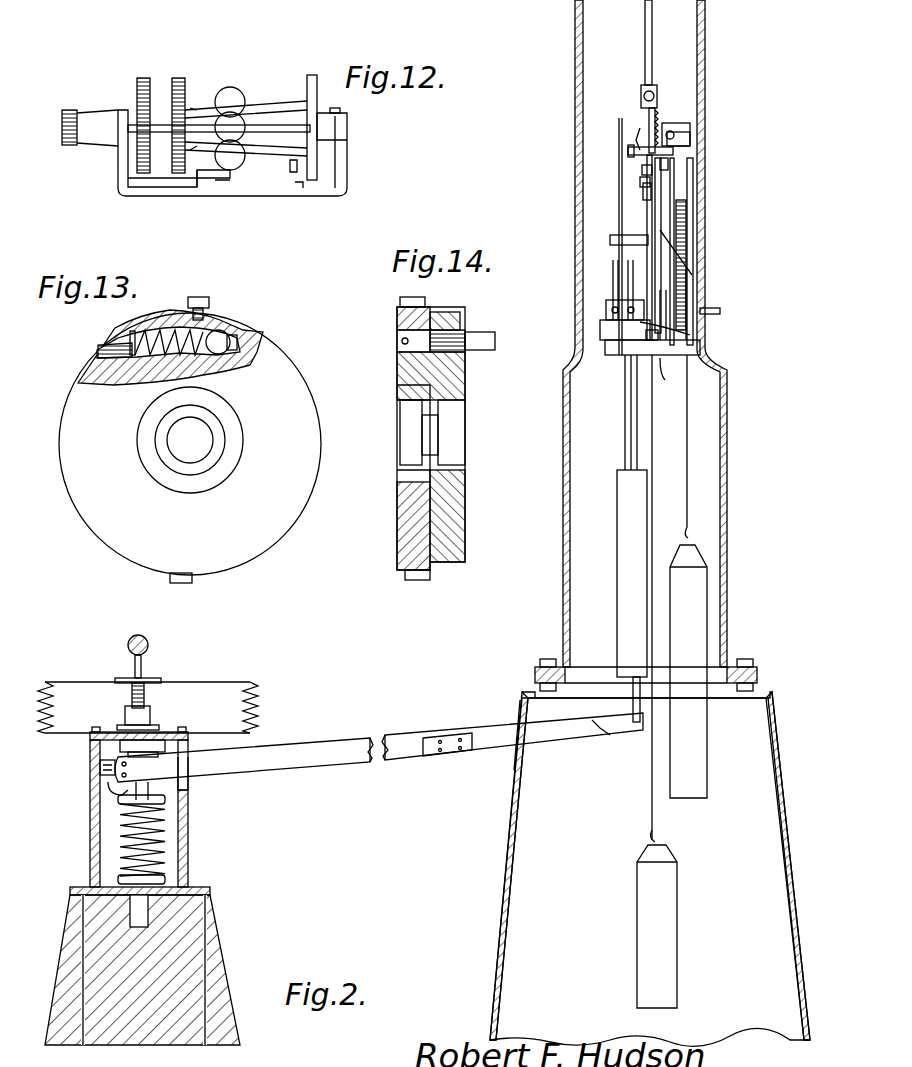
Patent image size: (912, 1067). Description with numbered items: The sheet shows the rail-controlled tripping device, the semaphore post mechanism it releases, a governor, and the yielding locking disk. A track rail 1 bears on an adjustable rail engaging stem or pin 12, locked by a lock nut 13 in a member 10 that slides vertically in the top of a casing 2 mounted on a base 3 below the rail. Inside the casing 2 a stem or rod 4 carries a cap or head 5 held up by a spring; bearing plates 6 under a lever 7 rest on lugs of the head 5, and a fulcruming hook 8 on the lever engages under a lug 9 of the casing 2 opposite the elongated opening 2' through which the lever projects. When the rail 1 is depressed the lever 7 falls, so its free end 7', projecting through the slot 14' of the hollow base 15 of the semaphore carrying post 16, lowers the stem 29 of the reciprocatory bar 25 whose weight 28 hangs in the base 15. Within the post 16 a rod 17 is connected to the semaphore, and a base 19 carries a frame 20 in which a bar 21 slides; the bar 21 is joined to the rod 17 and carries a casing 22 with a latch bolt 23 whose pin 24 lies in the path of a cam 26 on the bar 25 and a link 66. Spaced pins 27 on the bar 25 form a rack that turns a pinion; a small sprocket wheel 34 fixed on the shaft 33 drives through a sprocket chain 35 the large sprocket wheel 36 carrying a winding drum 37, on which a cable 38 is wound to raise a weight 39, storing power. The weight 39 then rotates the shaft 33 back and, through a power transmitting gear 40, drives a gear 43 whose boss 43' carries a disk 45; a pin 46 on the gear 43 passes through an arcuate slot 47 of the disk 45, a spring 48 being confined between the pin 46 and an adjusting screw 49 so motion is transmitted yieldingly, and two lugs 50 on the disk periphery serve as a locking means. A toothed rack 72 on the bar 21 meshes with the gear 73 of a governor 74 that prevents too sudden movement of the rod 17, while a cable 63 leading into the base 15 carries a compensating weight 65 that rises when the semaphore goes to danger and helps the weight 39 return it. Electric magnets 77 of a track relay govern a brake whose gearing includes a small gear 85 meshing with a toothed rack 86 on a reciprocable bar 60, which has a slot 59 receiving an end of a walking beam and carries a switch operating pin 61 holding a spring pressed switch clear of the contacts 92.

In FIG. 2, the track rail 1 is at (148, 641).
In FIG. 2, the casing 2 is at (160, 811).
In FIG. 2, the elongated opening 2' is at (211, 782).
In FIG. 2, the base 3 is at (185, 940).
In FIG. 2, the stem or rod 4 is at (165, 855).
In FIG. 2, the cap or head 5 is at (210, 838).
In FIG. 2, the bearing plates 6 is at (175, 772).
In FIG. 2, the lever 7 is at (505, 731).
In FIG. 2, the free end of lever 7' is at (608, 742).
In FIG. 2, the fulcruming hook 8 is at (108, 790).
In FIG. 2, the lug 9 is at (100, 766).
In FIG. 2, the member 10 is at (145, 750).
In FIG. 2, the rail engaging stem or pin 12 is at (144, 695).
In FIG. 2, the lock nut 13 is at (150, 712).
In FIG. 2, the housing wall 14' is at (541, 743).
In FIG. 2, the hollow base 15 is at (512, 848).
In FIG. 2, the semaphore carrying post or pedestal 16 is at (727, 590).
In FIG. 2, the rod 17 is at (652, 30).
In FIG. 2, the base 19 is at (700, 350).
In FIG. 2, the frame 20 is at (690, 268).
In FIG. 2, the bar 21 is at (640, 95).
In FIG. 2, the casing 22 is at (642, 170).
In FIG. 2, the latch bolt 23 is at (643, 198).
In FIG. 2, the pin 24 is at (640, 182).
In FIG. 2, the vertically reciprocatory bar 25 is at (610, 415).
In FIG. 2, the cam 26 is at (628, 155).
In FIG. 2, the spaced pins 27 is at (625, 276).
In FIG. 2, the weight 28 is at (617, 530).
In FIG. 2, the stem 29 is at (633, 700).
In FIG. 2, the shaft 33 is at (720, 311).
In FIG. 2, the small sprocket wheel 34 is at (688, 310).
In FIG. 2, the sprocket chain 35 is at (686, 270).
In FIG. 2, the large sprocket wheel 36 is at (693, 172).
In FIG. 2, the winding drum 37 is at (674, 210).
In FIG. 2, the cable 38 is at (689, 425).
In FIG. 2, the weight 39 is at (695, 637).
In FIG. 2, the power transmitting gear 40 is at (665, 380).
In FIG. 14, the gear 43 is at (454, 438).
In FIG. 14, the boss 43' is at (392, 415).
In FIG. 13, the disk or annular member 45 is at (300, 400).
In FIG. 14, the disk or annular member 45 is at (400, 345).
In FIG. 13, the pin 46 is at (230, 342).
In FIG. 14, the pin 46 is at (450, 340).
In FIG. 13, the arcuate slot 47 is at (200, 335).
In FIG. 14, the arcuate slot 47 is at (400, 318).
In FIG. 13, the spring 48 is at (232, 335).
In FIG. 13, the adjusting screw 49 is at (98, 350).
In FIG. 13, the lugs or studs 50 is at (218, 585).
In FIG. 14, the lugs or studs 50 is at (395, 600).
In FIG. 2, the slot 59 is at (668, 162).
In FIG. 2, the vertically reciprocable bar or member 60 is at (661, 240).
In FIG. 2, the switch operating pin 61 is at (640, 135).
In FIG. 2, the cable 63 is at (652, 455).
In FIG. 2, the compensating weight 65 is at (665, 935).
In FIG. 2, the link 66 is at (640, 232).
In FIG. 2, the toothed rack 72 is at (657, 115).
In FIG. 12, the gear 73 is at (68, 108).
In FIG. 12, the governor 74 is at (205, 98).
In FIG. 2, the electric magnets 77 is at (600, 328).
In FIG. 2, the small gear 85 is at (690, 335).
In FIG. 2, the toothed rack 86 is at (666, 305).
In FIG. 2, the contacts 92 is at (690, 135).